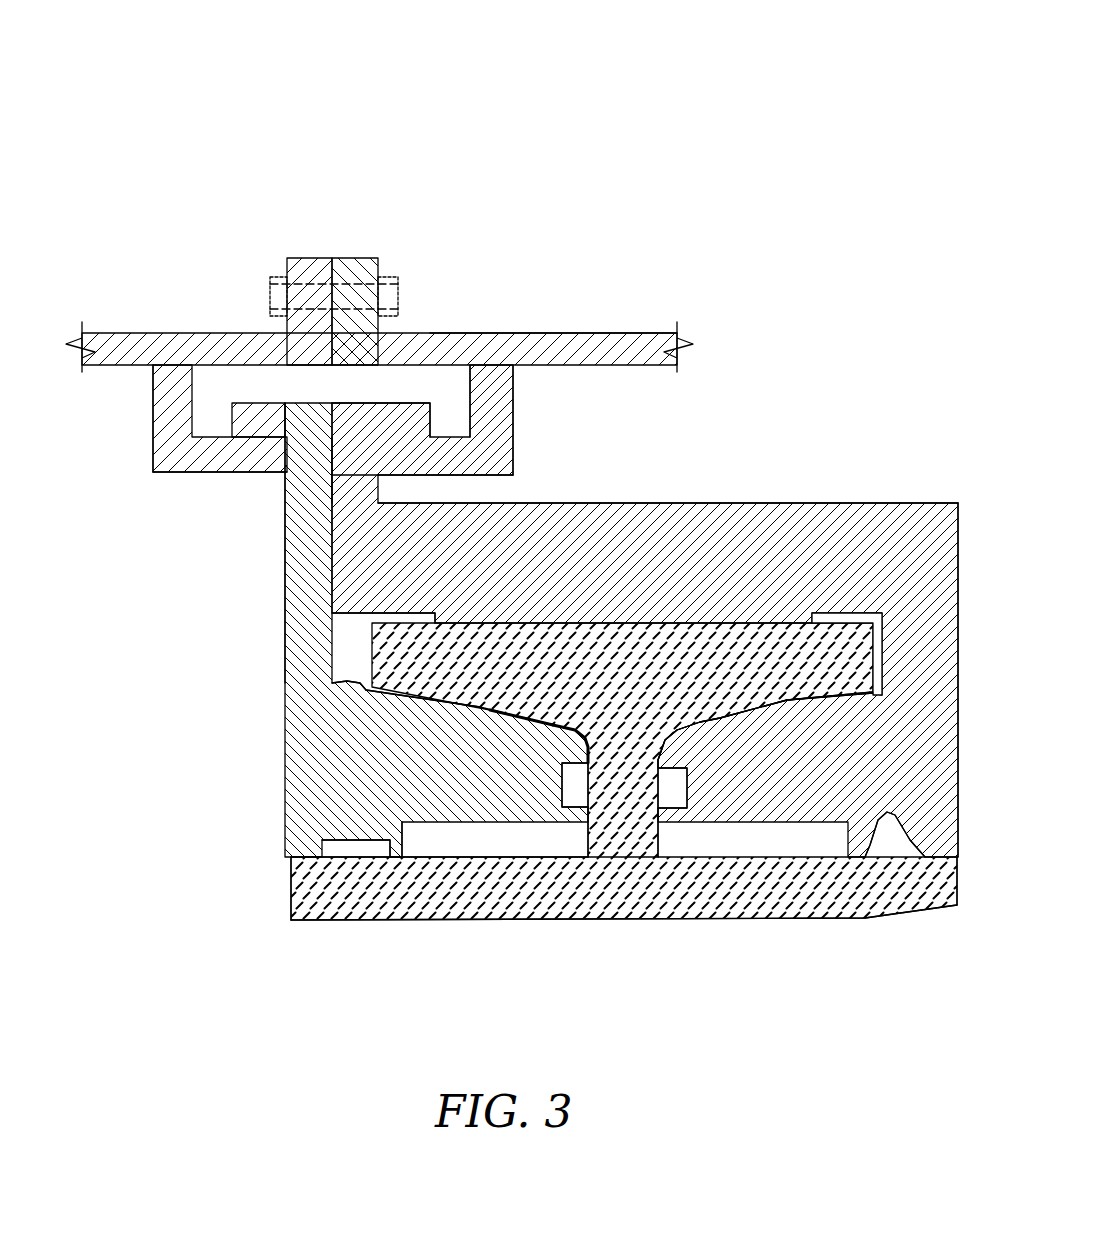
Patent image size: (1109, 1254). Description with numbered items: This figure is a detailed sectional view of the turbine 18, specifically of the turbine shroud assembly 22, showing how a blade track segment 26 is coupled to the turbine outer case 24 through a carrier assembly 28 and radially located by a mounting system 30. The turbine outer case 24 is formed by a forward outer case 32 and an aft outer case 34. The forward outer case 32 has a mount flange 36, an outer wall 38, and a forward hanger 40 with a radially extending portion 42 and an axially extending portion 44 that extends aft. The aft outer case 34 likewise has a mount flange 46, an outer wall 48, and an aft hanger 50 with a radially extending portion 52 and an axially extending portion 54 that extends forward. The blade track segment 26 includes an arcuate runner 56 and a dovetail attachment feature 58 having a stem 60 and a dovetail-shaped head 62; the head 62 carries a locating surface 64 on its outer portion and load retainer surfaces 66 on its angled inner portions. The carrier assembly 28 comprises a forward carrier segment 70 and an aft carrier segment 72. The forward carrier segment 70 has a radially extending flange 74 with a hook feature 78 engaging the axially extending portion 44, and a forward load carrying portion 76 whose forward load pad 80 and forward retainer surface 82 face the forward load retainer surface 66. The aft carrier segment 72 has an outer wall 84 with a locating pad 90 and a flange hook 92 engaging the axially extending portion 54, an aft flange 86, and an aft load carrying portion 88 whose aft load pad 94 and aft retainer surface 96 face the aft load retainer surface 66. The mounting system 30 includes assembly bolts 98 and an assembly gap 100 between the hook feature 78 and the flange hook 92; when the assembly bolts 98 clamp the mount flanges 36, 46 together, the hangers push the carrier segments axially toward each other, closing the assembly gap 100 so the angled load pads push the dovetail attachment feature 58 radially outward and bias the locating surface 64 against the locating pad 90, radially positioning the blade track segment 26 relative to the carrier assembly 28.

The turbine 18 is at (665, 185).
The turbine shroud assembly 22 is at (428, 226).
The turbine outer case 24 is at (336, 230).
The blade track segment 26 is at (700, 942).
The carrier assembly 28 is at (704, 432).
The mounting system 30 is at (108, 301).
The forward outer case 32 is at (160, 255).
The aft outer case 34 is at (500, 287).
The mount flange 36 is at (283, 276).
The outer wall 38 is at (225, 333).
The forward hanger 40 is at (135, 411).
The radially extending portion 42 is at (165, 410).
The axially extending portion 44 is at (240, 462).
The mount flange 46 is at (385, 272).
The outer wall 48 is at (597, 333).
The aft hanger 50 is at (537, 407).
The radially extending portion 52 is at (490, 440).
The axially extending portion 54 is at (440, 462).
The runner 56 is at (890, 885).
The dovetail attachment feature 58 is at (635, 826).
The stem 60 is at (568, 790).
The head 62 is at (770, 650).
The locating surface 64 is at (843, 607).
The load retainer surfaces 66 is at (935, 655).
The forward carrier segment 70 is at (258, 635).
The aft carrier segment 72 is at (848, 460).
The radially extending flange 74 is at (302, 598).
The forward load carrying portion 76 is at (376, 765).
The hook feature 78 is at (300, 468).
The forward load pad 80 is at (470, 712).
The forward retainer surface 82 is at (360, 686).
The outer wall 84 is at (710, 532).
The aft flange 86 is at (915, 660).
The aft load carrying portion 88 is at (847, 695).
The locating pad 90 is at (590, 640).
The flange hook 92 is at (412, 410).
The aft load pad 94 is at (773, 713).
The aft retainer surface 96 is at (737, 718).
The assembly bolts 98 is at (395, 303).
The assembly gap 100 is at (348, 622).